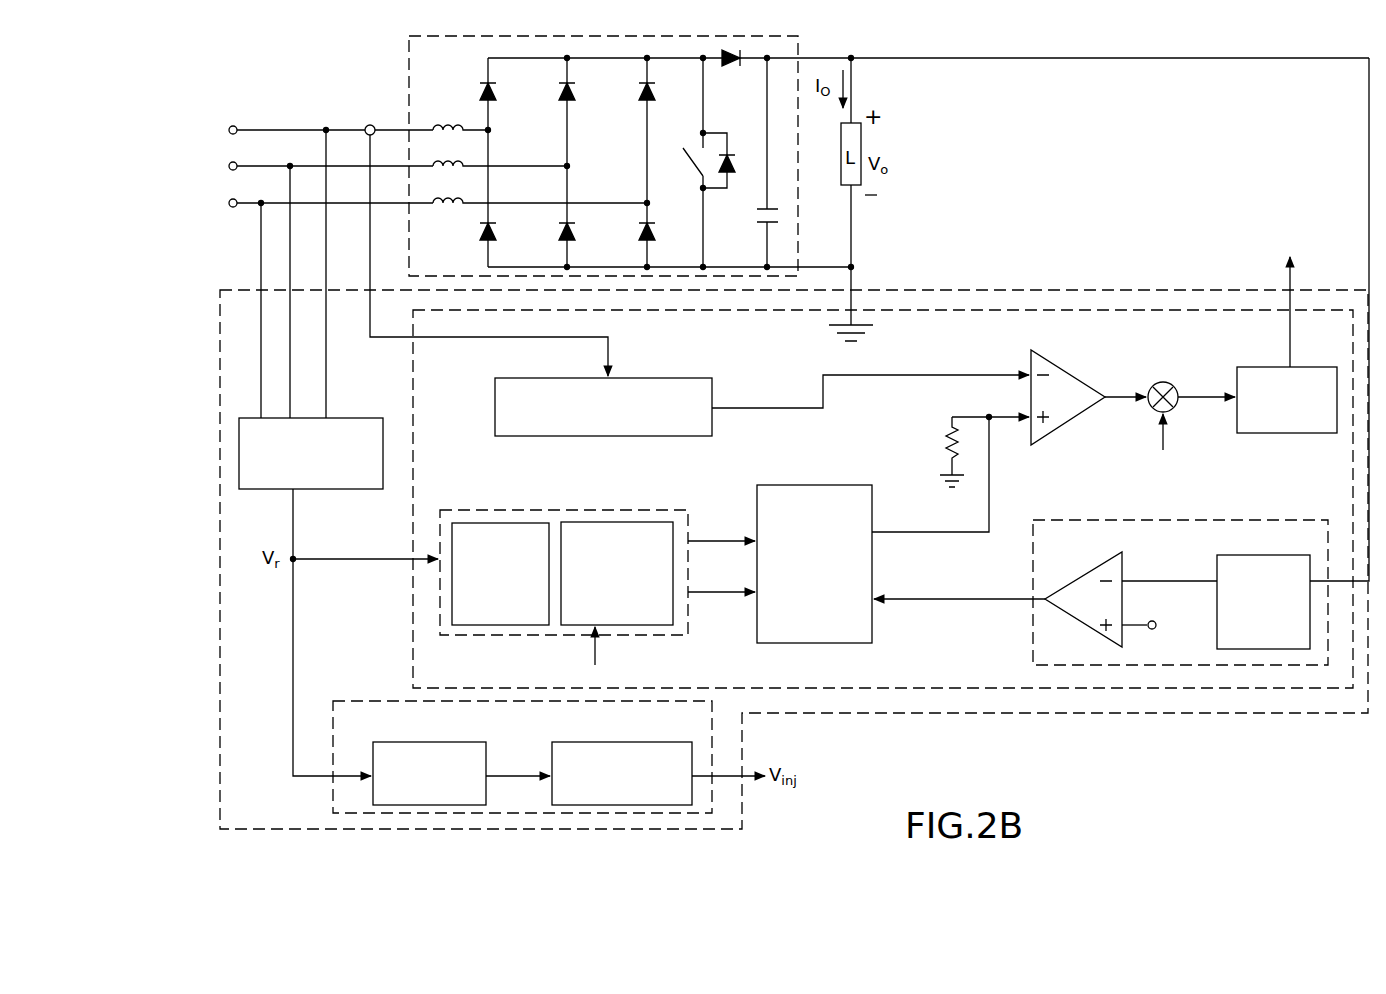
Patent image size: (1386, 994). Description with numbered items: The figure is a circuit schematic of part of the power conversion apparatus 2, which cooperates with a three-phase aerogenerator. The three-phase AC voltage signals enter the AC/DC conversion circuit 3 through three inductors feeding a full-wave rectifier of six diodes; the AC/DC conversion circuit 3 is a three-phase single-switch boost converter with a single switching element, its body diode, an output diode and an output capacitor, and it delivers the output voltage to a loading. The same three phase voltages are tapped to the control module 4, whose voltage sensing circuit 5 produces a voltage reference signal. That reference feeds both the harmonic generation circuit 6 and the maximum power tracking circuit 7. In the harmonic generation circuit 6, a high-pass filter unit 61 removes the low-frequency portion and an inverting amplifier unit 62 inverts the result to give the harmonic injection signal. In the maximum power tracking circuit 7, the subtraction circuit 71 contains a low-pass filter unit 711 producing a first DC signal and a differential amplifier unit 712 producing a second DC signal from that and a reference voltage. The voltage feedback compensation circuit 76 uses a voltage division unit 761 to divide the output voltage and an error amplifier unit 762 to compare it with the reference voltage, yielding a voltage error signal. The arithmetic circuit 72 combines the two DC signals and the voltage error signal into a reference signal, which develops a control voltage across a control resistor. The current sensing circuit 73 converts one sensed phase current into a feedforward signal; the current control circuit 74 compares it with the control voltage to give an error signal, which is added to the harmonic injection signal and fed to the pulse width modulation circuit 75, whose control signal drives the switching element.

The power conversion apparatus 2 is at (216, 71).
The AC/DC conversion circuit 3 is at (409, 60).
The control module 4 is at (918, 290).
The voltage sensing circuit 5 is at (337, 418).
The harmonic generation circuit 6 is at (393, 700).
The high-pass filter unit 61 is at (430, 742).
The inverting amplifier unit 62 is at (593, 742).
The maximum power tracking circuit 7 is at (1057, 308).
The subtraction circuit 71 is at (482, 510).
The low-pass filter unit 711 is at (508, 522).
The differential amplifier unit 712 is at (615, 522).
The arithmetic circuit 72 is at (787, 483).
The current sensing circuit 73 is at (667, 377).
The current control circuit 74 is at (1057, 365).
The pulse width modulation circuit 75 is at (1273, 366).
The voltage feedback compensation circuit 76 is at (1108, 520).
The voltage division unit 761 is at (1237, 555).
The error amplifier unit 762 is at (1058, 587).